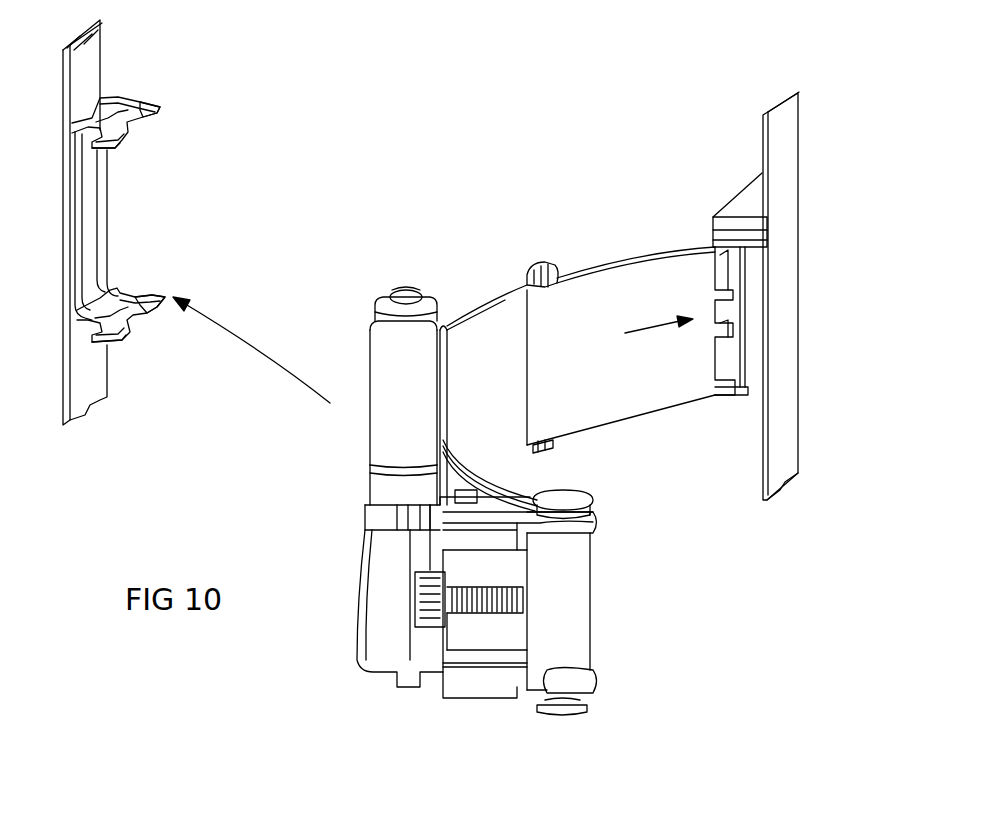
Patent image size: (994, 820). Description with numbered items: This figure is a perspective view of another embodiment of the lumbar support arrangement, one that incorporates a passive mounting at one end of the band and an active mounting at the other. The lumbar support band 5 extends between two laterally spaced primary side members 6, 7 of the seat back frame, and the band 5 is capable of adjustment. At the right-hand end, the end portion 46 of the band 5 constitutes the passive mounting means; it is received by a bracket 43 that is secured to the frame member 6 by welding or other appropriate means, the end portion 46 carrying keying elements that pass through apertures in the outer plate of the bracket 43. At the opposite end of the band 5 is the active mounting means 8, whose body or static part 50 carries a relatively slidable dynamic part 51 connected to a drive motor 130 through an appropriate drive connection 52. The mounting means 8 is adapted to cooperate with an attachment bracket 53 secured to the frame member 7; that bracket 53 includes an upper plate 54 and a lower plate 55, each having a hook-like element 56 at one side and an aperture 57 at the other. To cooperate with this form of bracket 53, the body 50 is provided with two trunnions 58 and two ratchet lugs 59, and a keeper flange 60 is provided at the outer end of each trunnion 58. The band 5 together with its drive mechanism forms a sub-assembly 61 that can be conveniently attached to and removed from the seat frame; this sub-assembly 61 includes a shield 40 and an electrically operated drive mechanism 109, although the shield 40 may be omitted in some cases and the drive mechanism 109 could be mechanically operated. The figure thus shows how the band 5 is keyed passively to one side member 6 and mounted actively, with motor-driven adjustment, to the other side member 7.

The lumbar support band 5 is at (617, 264).
The primary side member 6 is at (790, 137).
The primary side member 7 is at (80, 68).
The active mounting means 8 is at (603, 582).
The shield 40 is at (497, 315).
The bracket 43 is at (746, 316).
The end portion 46 is at (663, 382).
The body 50 is at (477, 698).
The dynamic part 51 is at (555, 607).
The drive connection 52 is at (497, 582).
The attachment bracket 53 is at (110, 213).
The upper plate 54 is at (125, 107).
The lower plate 55 is at (125, 298).
The hook-like element 56 is at (113, 150).
The aperture 57 is at (148, 100).
The trunnion 58 is at (540, 533).
The ratchet lug 59 is at (465, 478).
The keeper flange 60 is at (570, 497).
The sub-assembly 61 is at (527, 258).
The drive mechanism 109 is at (365, 480).
The drive motor 130 is at (387, 355).